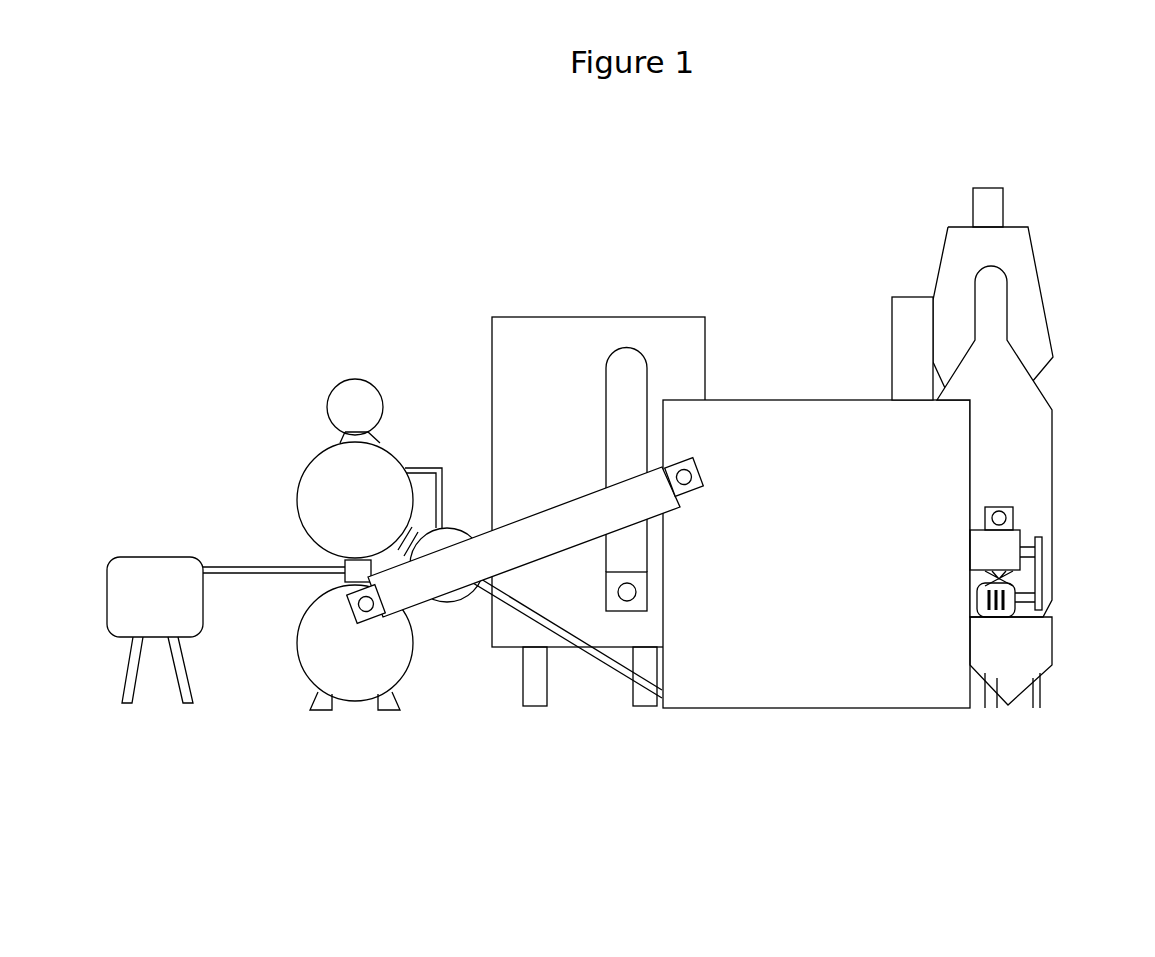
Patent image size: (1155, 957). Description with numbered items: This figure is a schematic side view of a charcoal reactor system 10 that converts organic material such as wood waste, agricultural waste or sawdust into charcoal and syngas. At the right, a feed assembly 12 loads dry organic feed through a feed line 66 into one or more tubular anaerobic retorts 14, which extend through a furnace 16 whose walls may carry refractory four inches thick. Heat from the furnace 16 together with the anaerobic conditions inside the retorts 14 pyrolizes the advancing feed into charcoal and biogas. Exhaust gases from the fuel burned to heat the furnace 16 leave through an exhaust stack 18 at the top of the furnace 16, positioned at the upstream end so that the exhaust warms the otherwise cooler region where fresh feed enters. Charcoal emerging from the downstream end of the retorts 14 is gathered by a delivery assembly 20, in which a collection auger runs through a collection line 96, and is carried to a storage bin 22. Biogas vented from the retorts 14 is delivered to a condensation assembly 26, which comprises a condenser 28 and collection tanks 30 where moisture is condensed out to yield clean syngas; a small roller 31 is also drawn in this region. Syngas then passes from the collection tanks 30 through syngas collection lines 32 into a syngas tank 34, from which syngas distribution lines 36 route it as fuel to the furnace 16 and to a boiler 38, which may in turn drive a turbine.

The charcoal reactor system 10 is at (587, 890).
The feed assembly 12 is at (1078, 290).
The anaerobic retorts 14 is at (1020, 530).
The furnace 16 is at (907, 708).
The exhaust stack 18 is at (892, 322).
The delivery assembly 20 is at (577, 440).
The storage bin 22 is at (630, 317).
The condensation assembly 26 is at (432, 676).
The condenser 28 is at (460, 600).
The collection tanks 30 is at (298, 483).
The guide roller 31 is at (330, 393).
The syngas collection lines 32 is at (441, 467).
The syngas tank 34 is at (462, 530).
The syngas distribution lines 36 is at (280, 577).
The boiler 38 is at (172, 557).
The feed line 66 is at (1008, 507).
The collection line 96 is at (637, 592).